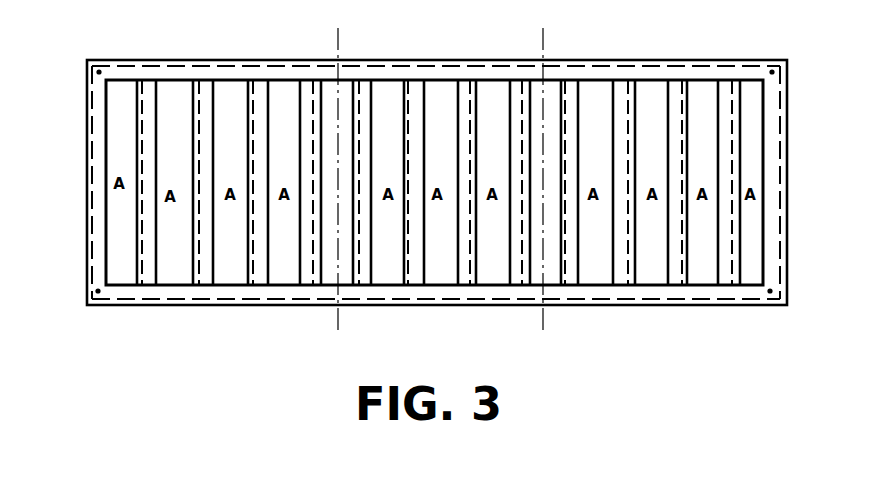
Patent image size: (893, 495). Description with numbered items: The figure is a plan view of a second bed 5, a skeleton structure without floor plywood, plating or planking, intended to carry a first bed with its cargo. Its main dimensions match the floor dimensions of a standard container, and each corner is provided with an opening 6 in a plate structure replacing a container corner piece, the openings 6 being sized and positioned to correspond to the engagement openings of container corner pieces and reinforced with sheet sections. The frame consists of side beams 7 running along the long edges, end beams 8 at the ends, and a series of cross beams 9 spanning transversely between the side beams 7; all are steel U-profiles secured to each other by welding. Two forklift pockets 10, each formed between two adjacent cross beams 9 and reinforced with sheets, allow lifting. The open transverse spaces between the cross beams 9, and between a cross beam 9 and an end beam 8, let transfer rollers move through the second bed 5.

The second bed 5 is at (282, 60).
The openings 6 is at (100, 71).
The side beams 7 is at (222, 70).
The end beams 8 is at (98, 129).
The cross beams 9 is at (418, 86).
The forklift pockets 10 is at (338, 45).